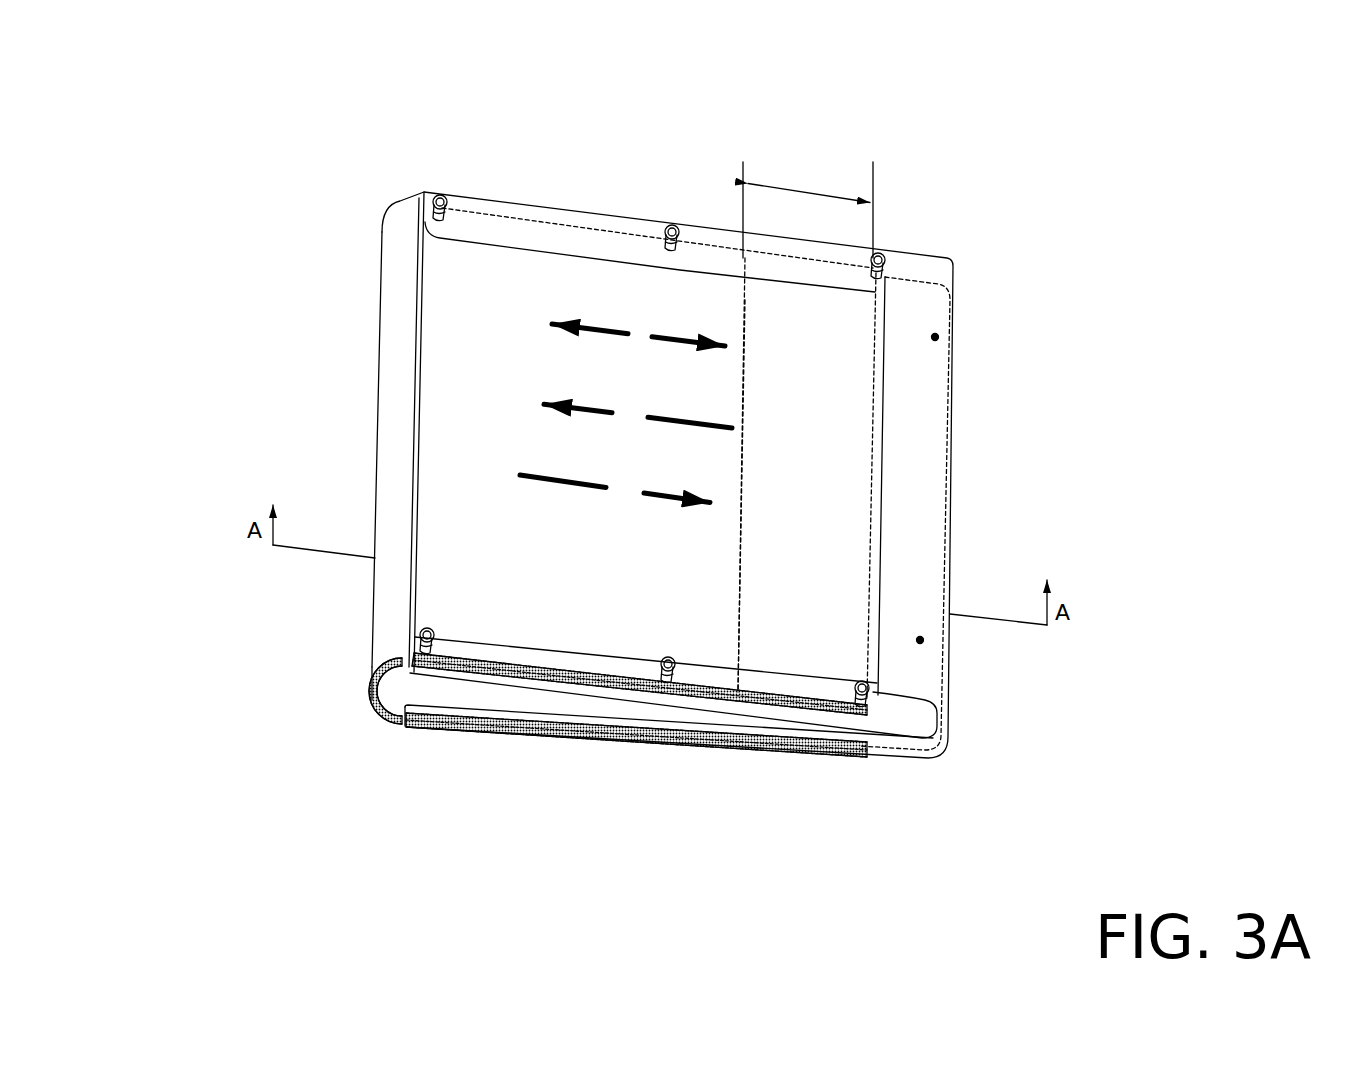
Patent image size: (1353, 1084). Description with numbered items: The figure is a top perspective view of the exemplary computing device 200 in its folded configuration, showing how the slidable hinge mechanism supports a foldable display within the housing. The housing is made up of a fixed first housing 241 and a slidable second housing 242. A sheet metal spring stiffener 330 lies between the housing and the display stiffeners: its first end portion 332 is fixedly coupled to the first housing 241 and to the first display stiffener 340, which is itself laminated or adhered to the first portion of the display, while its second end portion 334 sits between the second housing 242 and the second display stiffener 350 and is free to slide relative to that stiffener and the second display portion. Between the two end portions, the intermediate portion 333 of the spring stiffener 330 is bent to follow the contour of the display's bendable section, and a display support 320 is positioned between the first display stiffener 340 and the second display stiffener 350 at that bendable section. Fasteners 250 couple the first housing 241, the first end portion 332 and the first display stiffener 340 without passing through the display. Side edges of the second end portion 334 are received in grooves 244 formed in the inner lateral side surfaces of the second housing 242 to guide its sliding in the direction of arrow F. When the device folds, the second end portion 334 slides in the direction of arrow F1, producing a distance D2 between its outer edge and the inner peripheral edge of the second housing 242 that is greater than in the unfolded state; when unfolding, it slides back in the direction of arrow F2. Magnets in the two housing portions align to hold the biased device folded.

The computing device 200 is at (165, 111).
The second housing 242 is at (937, 493).
The first housing 241 is at (908, 737).
The spring stiffener 330 is at (376, 350).
The grooves 244 is at (472, 226).
The intermediate portion 333 is at (387, 414).
The display support 320 is at (372, 695).
The first display stiffener 340 is at (500, 730).
The fasteners 250 is at (440, 194).
The second end portion 334 is at (738, 320).
The first end portion 332 is at (860, 397).
The second display stiffener 350 is at (783, 703).
The distance D2 is at (810, 210).
The arrow F is at (638, 334).
The arrow F1 is at (638, 415).
The arrow F2 is at (615, 490).